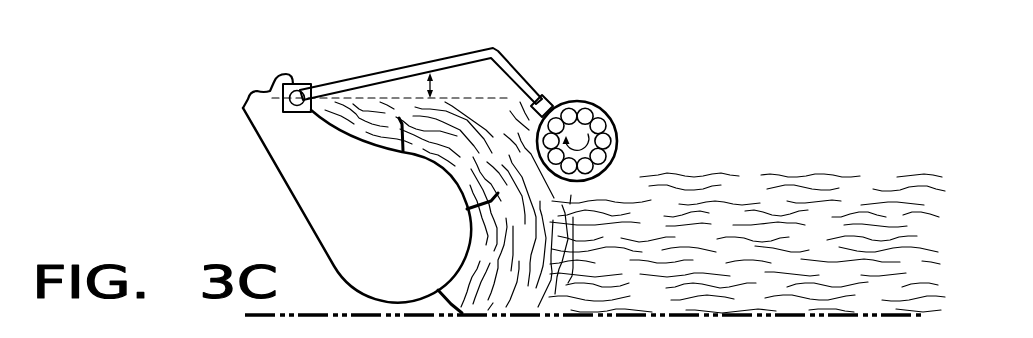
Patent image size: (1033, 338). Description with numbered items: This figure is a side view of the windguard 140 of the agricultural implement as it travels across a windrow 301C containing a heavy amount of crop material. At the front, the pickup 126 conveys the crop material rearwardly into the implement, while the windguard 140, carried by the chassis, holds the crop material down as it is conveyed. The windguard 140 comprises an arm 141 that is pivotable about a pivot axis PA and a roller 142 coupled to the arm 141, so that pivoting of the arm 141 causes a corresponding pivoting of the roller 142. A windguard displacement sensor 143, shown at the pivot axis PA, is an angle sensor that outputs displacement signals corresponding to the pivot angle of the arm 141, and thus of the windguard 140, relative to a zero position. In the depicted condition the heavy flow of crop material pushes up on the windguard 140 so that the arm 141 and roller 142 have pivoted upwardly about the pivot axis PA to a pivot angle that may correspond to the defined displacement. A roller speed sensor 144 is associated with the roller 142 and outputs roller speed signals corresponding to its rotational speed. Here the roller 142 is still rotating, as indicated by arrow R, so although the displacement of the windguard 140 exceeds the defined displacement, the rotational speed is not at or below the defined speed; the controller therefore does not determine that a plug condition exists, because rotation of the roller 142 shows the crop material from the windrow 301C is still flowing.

The pickup 126 is at (345, 227).
The windguard 140 is at (528, 53).
The arm 141 is at (392, 70).
The roller 142 is at (609, 114).
The windguard displacement sensor 143 is at (299, 83).
The roller speed sensor 144 is at (552, 97).
The pivot axis PA is at (283, 90).
The arrow indicating roller rotation R is at (616, 150).
The windrow 301C is at (720, 153).